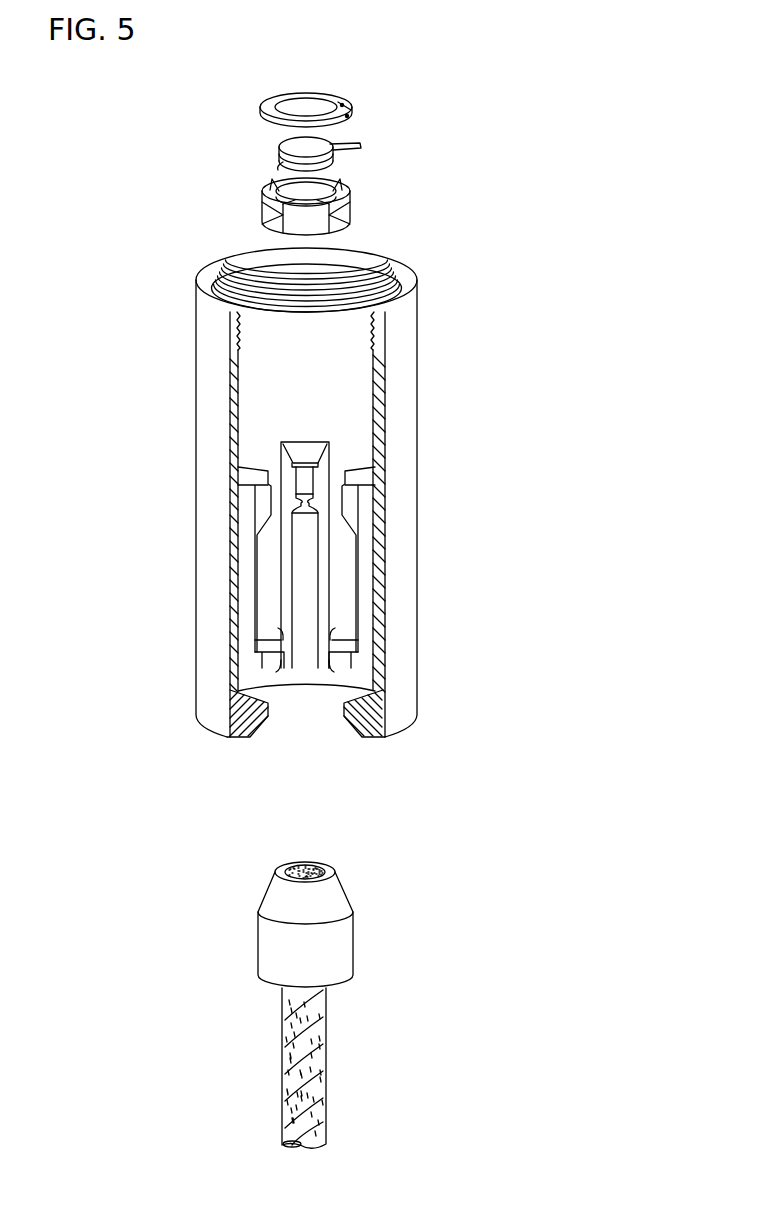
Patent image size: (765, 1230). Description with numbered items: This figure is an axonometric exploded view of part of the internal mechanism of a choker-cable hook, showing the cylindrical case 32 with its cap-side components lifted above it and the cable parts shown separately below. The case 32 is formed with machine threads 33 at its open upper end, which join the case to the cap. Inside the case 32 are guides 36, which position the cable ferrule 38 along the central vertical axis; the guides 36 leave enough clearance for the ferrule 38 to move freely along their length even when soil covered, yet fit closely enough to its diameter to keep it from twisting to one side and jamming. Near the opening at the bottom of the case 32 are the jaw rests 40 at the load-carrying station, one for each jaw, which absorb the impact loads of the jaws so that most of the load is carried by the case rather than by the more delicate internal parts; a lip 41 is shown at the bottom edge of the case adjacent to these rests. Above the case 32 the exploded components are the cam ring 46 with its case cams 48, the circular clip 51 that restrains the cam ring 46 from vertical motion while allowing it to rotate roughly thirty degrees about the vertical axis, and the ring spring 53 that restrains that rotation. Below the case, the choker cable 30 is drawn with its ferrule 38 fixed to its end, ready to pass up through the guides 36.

The choker cable 30 is at (320, 1057).
The case 32 is at (208, 340).
The machine threads 33 is at (367, 282).
The guides 36 is at (300, 578).
The cable ferrule 38 is at (278, 958).
The jaw rests 40 is at (340, 672).
The bottom lip 41 is at (265, 660).
The cam ring 46 is at (268, 188).
The case cams 48 is at (263, 212).
The circular clip 51 is at (350, 123).
The ring spring 53 is at (333, 164).